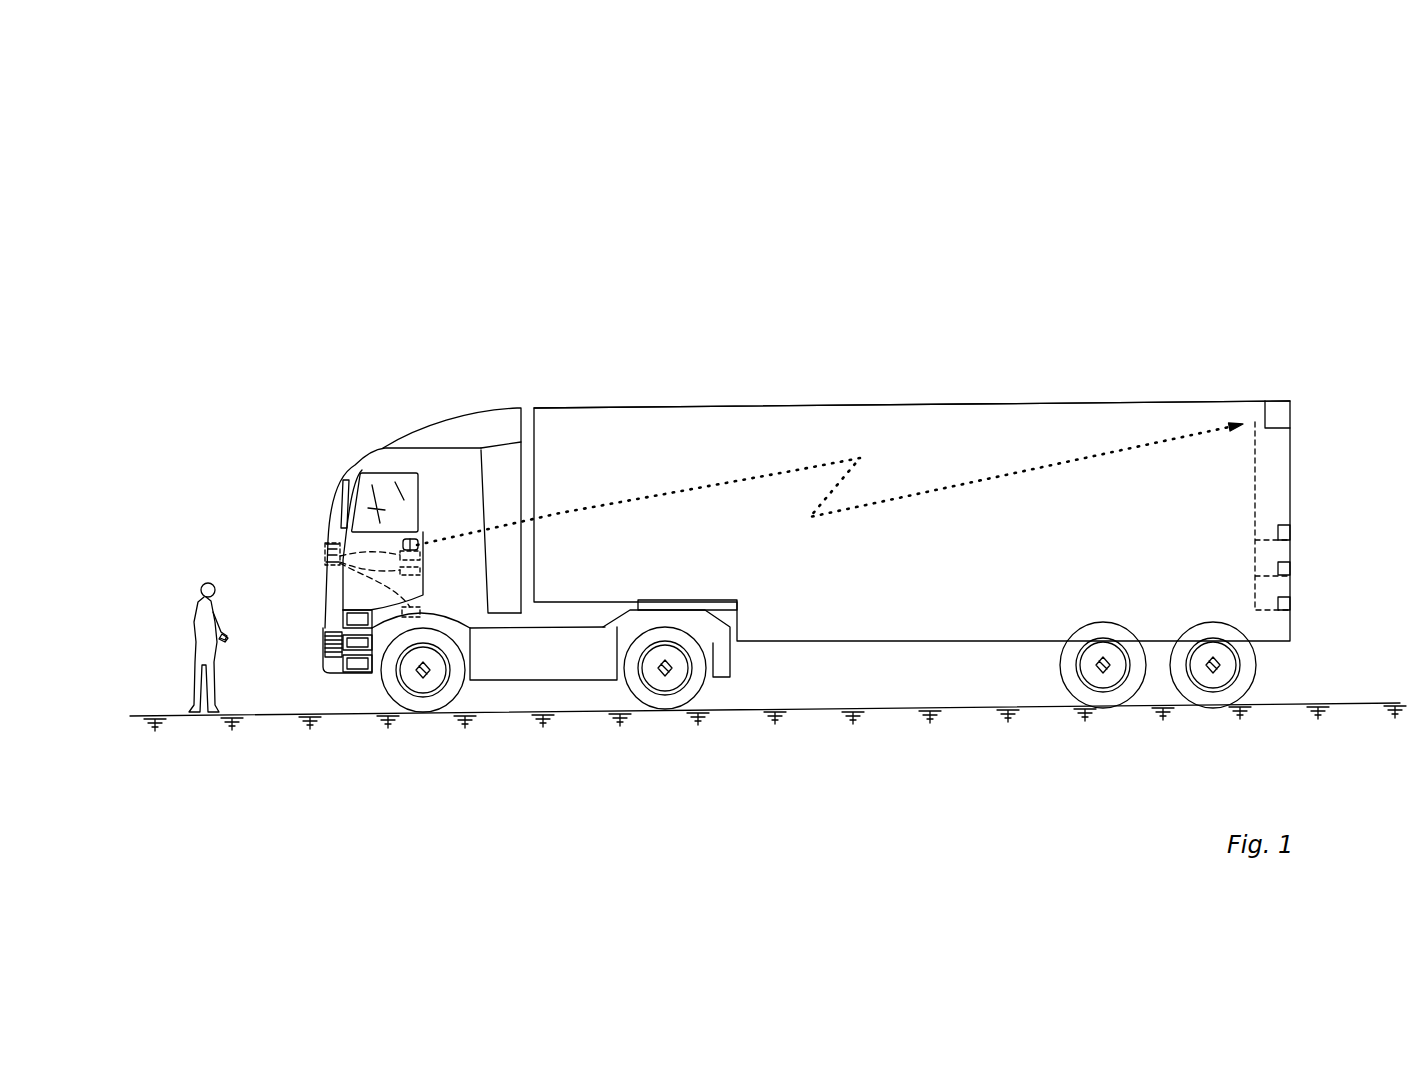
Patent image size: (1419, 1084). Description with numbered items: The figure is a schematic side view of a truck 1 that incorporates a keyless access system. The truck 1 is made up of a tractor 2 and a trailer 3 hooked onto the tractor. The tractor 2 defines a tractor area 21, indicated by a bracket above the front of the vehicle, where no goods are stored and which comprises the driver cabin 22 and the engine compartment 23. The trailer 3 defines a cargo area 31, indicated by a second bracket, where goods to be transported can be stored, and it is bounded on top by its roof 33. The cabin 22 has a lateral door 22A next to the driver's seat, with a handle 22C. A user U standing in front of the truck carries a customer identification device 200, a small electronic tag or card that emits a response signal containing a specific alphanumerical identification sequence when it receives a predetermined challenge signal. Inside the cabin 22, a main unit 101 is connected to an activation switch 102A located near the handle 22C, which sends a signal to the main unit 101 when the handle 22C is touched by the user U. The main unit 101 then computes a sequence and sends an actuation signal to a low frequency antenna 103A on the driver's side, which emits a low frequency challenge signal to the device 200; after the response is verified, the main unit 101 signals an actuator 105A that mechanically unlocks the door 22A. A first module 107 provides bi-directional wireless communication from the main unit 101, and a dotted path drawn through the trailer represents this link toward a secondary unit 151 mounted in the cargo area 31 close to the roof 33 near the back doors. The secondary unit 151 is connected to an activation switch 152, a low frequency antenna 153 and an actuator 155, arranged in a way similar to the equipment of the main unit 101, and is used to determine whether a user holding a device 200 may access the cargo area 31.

The truck 1 is at (1041, 265).
The tractor 2 is at (333, 672).
The trailer 3 is at (872, 602).
The tractor area 21 is at (540, 375).
The driver cabin 22 is at (463, 517).
The lateral door 22A is at (380, 468).
The handle 22C is at (418, 545).
The engine compartment 23 is at (330, 583).
The cargo area 31 is at (1280, 367).
The roof 33 is at (1143, 400).
The main unit 101 is at (328, 560).
The activation switch 102A is at (420, 571).
The low frequency antenna 103A is at (402, 613).
The actuator 105A is at (420, 555).
The first module 107 is at (328, 535).
The secondary unit 151 is at (1283, 415).
The activation switch 152 is at (1283, 568).
The low frequency antenna 153 is at (1283, 605).
The actuator 155 is at (1283, 527).
The customer identification device 200 is at (227, 637).
The user U is at (180, 630).